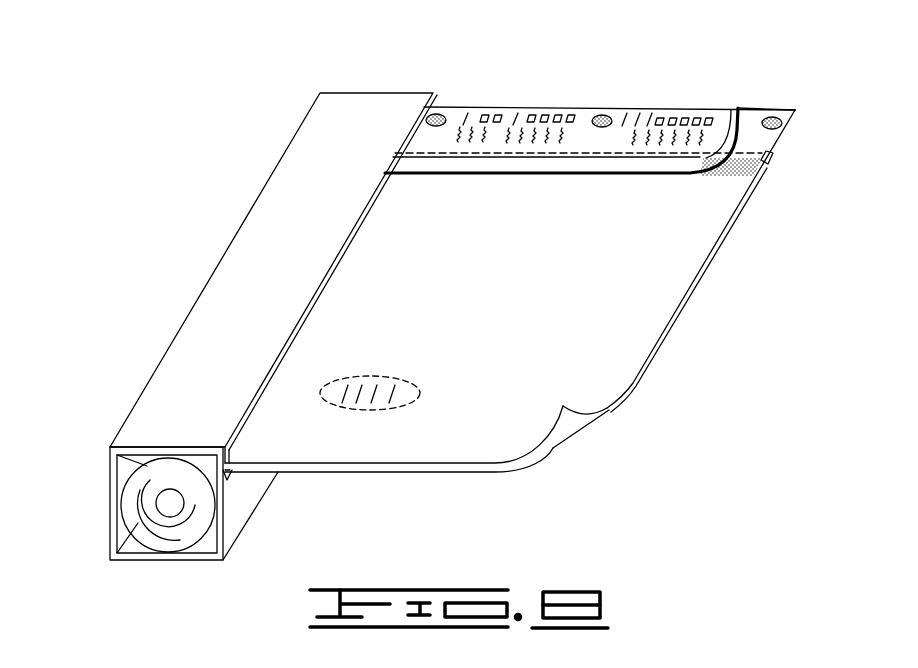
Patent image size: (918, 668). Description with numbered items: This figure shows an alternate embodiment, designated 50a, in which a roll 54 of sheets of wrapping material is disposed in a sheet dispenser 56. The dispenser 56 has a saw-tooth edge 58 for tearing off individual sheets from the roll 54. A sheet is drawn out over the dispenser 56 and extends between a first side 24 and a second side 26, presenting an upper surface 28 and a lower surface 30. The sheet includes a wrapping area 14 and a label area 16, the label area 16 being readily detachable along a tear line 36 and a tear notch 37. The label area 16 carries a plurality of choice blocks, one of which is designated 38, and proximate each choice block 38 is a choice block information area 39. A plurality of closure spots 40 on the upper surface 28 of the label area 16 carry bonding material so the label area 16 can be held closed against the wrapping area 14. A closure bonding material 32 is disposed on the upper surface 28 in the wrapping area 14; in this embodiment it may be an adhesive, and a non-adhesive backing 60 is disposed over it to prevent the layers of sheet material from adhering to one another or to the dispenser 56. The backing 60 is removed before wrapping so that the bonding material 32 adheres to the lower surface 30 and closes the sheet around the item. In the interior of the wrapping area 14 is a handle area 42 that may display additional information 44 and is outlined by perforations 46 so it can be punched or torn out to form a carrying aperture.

The wrapping area 14 is at (510, 311).
The label area 16 is at (620, 120).
The first side 24 is at (461, 473).
The second side 26 is at (620, 130).
The upper surface 28 is at (625, 263).
The lower surface 30 is at (570, 423).
The closure bonding material 32 is at (767, 167).
The tear line 36 is at (653, 106).
The tear notch 37 is at (767, 162).
The choice block 38 is at (531, 116).
The choice block information area 39 is at (523, 130).
The closure spot 40 is at (441, 113).
The handle area 42 is at (391, 360).
The additional information 44 is at (375, 392).
The perforations 46 is at (413, 384).
The roll of sheets in a sheet dispenser 50a is at (262, 152).
The roll 54 is at (155, 507).
The sheet dispenser 56 is at (186, 318).
The saw-tooth edge 58 is at (231, 479).
The non-adhesive backing 60 is at (737, 125).